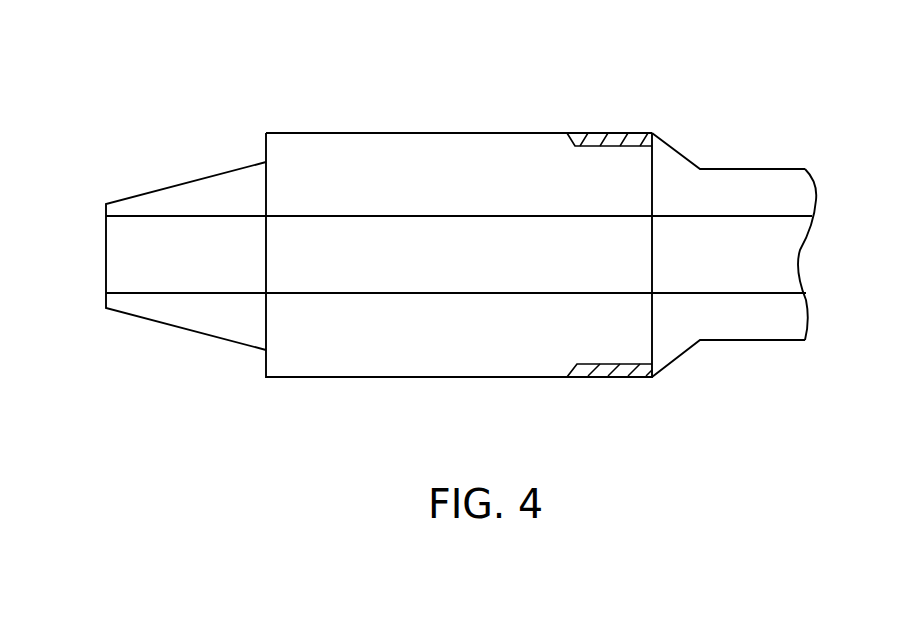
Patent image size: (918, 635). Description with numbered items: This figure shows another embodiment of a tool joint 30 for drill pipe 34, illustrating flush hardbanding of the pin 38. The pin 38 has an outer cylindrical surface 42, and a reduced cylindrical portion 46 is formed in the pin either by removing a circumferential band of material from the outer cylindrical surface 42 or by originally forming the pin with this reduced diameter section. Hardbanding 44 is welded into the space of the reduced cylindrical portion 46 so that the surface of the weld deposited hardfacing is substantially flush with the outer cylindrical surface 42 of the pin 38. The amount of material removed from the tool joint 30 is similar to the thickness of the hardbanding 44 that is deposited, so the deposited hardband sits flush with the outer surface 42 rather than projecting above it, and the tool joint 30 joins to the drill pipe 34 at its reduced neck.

The tool joint 30 is at (338, 133).
The outer cylindrical surface 42 is at (425, 133).
The pin 38 is at (532, 133).
The hardbanding 44 is at (624, 133).
The reduced cylindrical portion 46 is at (618, 138).
The drill pipe 34 is at (743, 169).